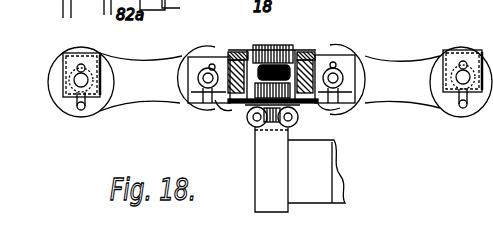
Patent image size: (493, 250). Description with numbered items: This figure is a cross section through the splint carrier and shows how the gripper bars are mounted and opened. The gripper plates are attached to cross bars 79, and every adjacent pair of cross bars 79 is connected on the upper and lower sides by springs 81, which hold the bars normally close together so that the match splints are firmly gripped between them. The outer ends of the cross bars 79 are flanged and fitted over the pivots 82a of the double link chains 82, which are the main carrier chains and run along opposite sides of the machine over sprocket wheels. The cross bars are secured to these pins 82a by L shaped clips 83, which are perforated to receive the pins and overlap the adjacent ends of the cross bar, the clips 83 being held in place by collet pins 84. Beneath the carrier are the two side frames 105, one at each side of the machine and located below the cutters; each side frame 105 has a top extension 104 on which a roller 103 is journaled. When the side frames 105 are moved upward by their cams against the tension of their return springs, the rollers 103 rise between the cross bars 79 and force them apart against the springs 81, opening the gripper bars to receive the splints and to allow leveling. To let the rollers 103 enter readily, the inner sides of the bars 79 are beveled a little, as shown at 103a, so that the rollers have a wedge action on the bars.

The cross bar 79 is at (232, 55).
The spring 81 is at (278, 47).
The double link chain 82 is at (396, 72).
The pivot 82a is at (342, 90).
The L shaped clip 83 is at (196, 60).
The collet pin 84 is at (206, 64).
The roller 103 is at (257, 122).
The bevel 103a is at (238, 110).
The top extension 104 is at (258, 135).
The side frame 105 is at (332, 203).